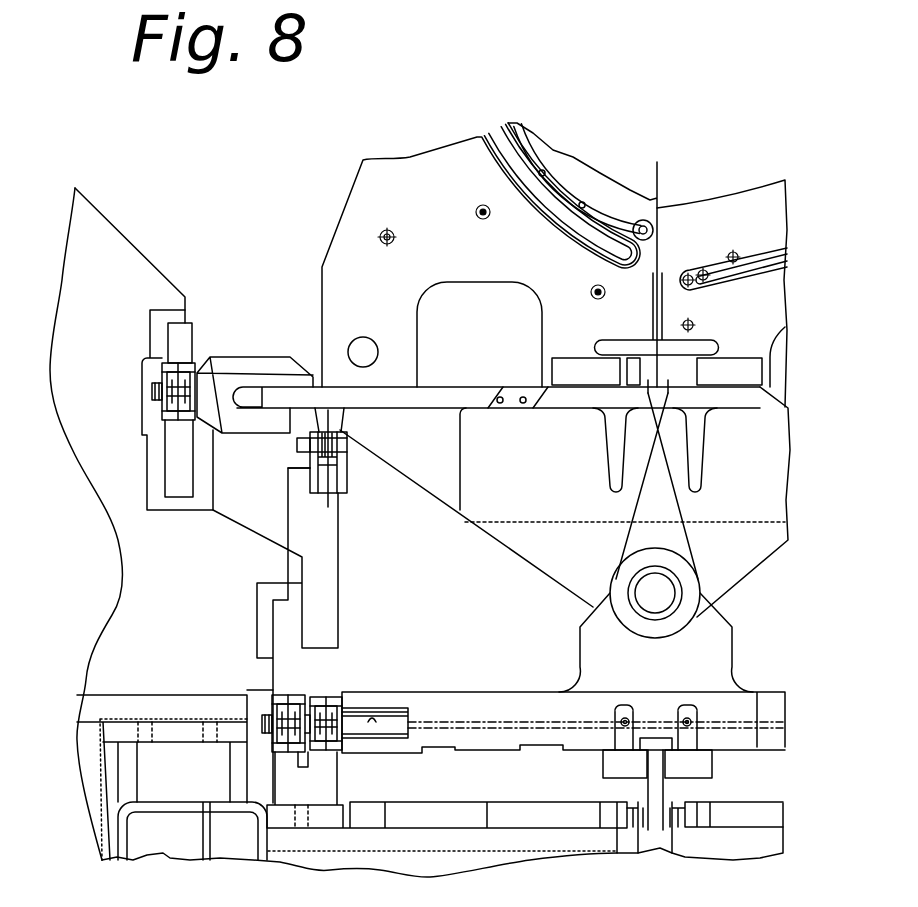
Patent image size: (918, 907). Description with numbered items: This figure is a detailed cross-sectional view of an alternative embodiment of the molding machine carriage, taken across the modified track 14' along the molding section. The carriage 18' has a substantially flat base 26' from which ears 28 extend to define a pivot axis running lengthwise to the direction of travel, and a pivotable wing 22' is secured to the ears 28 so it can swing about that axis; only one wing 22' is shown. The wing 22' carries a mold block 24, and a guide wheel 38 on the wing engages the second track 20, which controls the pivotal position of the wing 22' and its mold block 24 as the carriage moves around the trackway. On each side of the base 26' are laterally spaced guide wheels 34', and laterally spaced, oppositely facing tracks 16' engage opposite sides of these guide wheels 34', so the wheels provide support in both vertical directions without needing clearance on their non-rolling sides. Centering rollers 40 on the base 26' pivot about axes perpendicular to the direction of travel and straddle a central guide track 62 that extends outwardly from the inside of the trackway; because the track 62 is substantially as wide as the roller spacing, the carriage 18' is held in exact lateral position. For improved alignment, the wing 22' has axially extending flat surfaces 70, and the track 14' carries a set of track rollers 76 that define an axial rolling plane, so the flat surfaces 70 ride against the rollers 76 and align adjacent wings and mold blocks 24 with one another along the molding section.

The track 14' is at (416, 532).
The tracks 16' is at (280, 696).
The carriage 18' is at (458, 646).
The second track 20 is at (183, 333).
The wing 22' is at (493, 487).
The mold block 24 is at (444, 259).
The base 26' is at (526, 740).
The ears 28 is at (597, 633).
The guide wheels 34' is at (270, 705).
The guide wheel 38 is at (160, 367).
The centering rollers 40 is at (613, 762).
The central guide track 62 is at (657, 793).
The flat surfaces 70 is at (336, 432).
The track rollers 76 is at (333, 458).